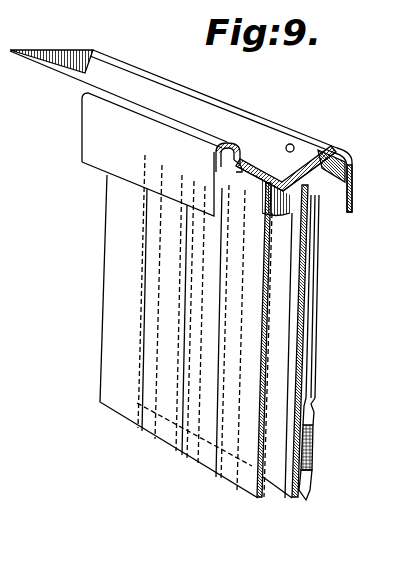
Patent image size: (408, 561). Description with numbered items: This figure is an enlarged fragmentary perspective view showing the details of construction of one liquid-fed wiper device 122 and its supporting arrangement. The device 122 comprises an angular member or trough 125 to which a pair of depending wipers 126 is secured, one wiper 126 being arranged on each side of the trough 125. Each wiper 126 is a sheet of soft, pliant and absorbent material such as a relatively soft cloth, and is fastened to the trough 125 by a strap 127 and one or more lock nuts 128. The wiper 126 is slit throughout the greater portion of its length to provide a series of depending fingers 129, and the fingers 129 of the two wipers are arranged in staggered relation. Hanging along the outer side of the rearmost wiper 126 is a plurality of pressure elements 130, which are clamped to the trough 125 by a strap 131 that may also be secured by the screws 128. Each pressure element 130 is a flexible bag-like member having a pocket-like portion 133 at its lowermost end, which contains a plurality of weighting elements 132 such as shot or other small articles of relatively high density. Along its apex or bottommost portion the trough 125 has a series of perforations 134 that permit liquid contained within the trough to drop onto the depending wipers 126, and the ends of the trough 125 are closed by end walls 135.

The liquid-fed wiper device 122 is at (170, 312).
The angular member (trough) 125 is at (312, 150).
The depending wiper 126 is at (319, 342).
The strap 127 is at (261, 138).
The lock nut 128 is at (222, 165).
The depending finger 129 is at (192, 450).
The pressure element 130 is at (317, 410).
The strap 131 is at (343, 173).
The weighting element 132 is at (316, 445).
The pocket-like portion 133 is at (312, 483).
The perforation 134 is at (288, 215).
The end wall 135 is at (50, 60).